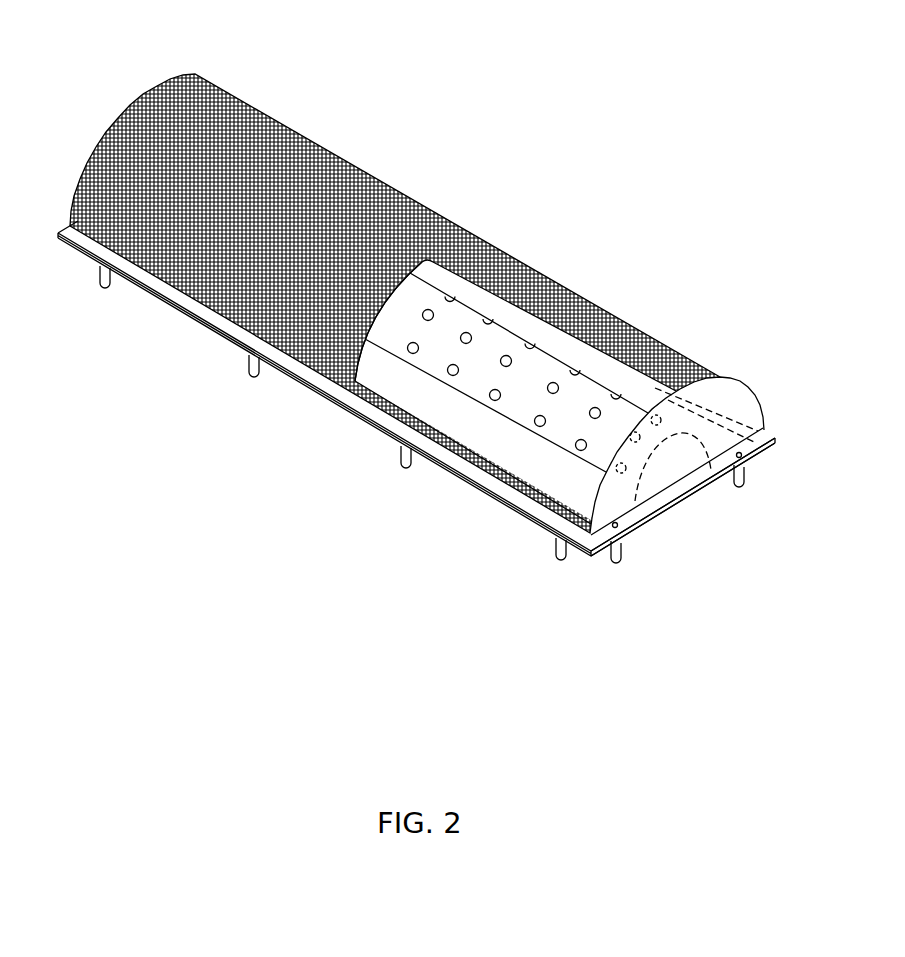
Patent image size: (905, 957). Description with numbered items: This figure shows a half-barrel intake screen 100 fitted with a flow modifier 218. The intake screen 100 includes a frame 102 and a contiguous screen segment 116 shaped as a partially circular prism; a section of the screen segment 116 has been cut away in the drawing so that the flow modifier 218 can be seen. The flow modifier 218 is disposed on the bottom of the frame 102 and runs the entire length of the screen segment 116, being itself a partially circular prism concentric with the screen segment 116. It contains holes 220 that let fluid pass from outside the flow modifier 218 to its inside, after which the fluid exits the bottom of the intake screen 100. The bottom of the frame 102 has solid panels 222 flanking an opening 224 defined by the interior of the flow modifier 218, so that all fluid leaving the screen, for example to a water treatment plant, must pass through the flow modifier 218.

The half-barrel intake screen 100 is at (633, 108).
The frame 102 is at (450, 191).
The screen segment 116 is at (517, 266).
The flow modifier 218 is at (393, 330).
The holes 220 is at (570, 440).
The solid panels 222 is at (745, 452).
The opening 224 is at (665, 456).